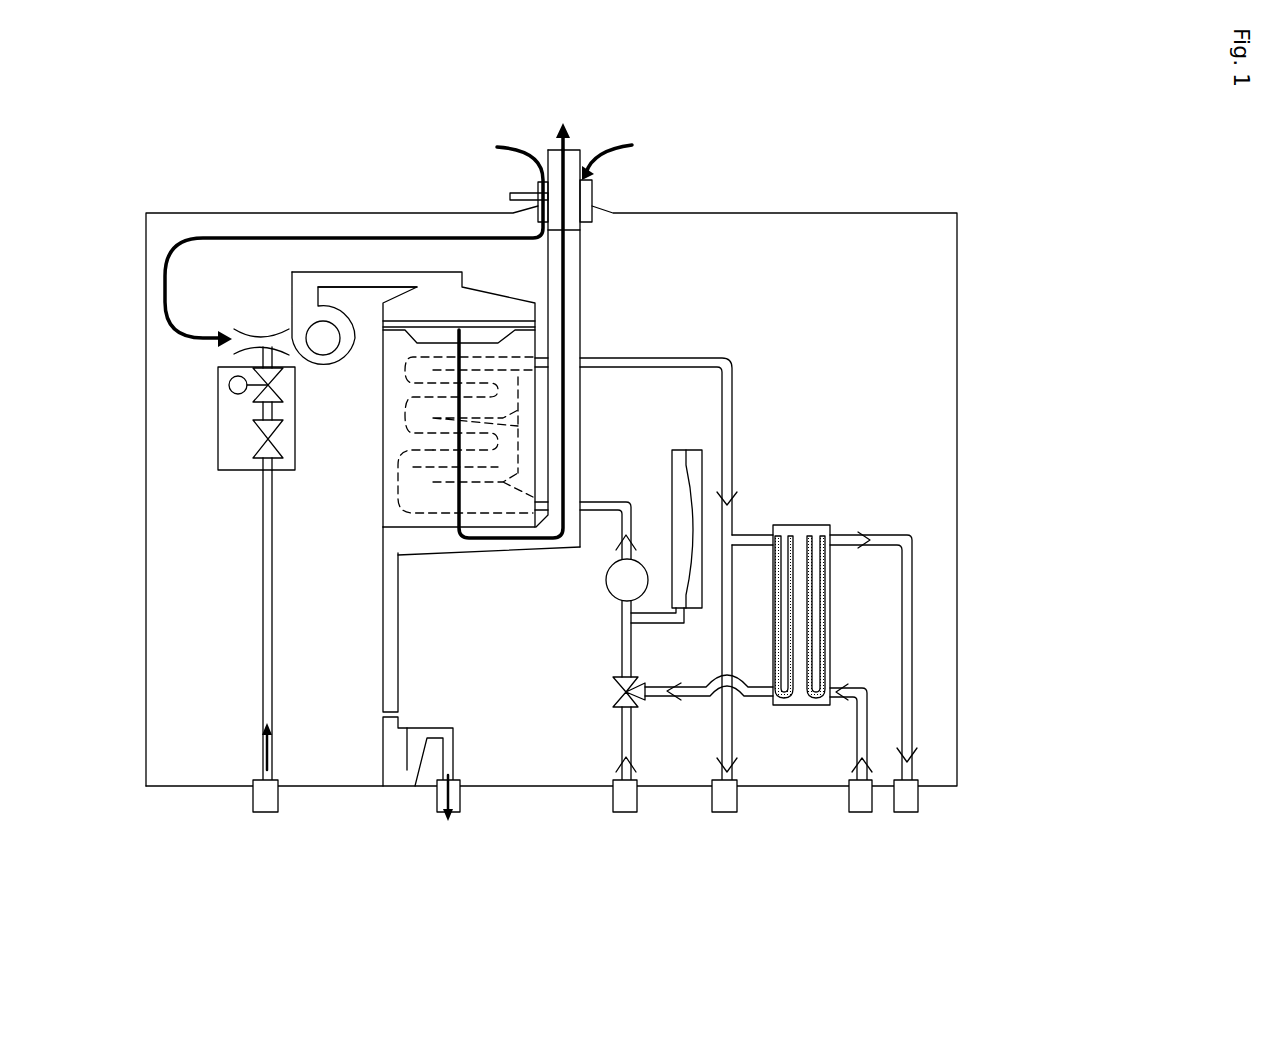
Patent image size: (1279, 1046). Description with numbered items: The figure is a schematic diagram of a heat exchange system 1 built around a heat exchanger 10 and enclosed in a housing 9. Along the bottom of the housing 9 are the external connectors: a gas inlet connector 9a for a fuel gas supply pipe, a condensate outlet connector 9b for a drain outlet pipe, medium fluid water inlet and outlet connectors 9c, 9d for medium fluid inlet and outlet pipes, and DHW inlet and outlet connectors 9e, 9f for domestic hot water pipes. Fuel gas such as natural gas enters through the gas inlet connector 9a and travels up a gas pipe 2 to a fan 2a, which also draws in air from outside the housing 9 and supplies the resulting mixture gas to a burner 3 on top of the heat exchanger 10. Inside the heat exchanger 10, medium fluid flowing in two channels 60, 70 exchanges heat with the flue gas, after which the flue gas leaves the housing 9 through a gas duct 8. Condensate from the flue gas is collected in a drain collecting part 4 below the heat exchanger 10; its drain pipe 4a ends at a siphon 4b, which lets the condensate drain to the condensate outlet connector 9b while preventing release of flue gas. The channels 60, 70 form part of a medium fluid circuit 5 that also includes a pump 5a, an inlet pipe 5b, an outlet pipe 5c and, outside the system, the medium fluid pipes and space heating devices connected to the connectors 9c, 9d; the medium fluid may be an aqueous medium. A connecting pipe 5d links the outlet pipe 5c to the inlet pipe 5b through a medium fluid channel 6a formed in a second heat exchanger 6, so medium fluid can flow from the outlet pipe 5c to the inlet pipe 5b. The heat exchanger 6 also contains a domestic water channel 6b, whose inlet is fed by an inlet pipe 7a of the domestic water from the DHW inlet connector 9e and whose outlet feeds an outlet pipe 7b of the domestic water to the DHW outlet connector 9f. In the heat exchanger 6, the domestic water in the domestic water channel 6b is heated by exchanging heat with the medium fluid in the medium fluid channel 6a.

The heat exchange system 1 is at (1040, 200).
The gas pipe 2 is at (263, 618).
The fan 2a is at (322, 369).
The burner 3 is at (545, 326).
The drain collecting part 4 is at (482, 556).
The drain pipe 4a is at (398, 662).
The siphon 4b is at (383, 751).
The medium fluid circuit 5 is at (757, 378).
The pump 5a is at (606, 588).
The inlet pipe 5b is at (616, 737).
The outlet pipe 5c is at (707, 420).
The connecting pipe 5d is at (758, 528).
The heat exchanger 6 is at (803, 518).
The medium fluid channel 6a is at (779, 706).
The domestic water channel 6b is at (821, 706).
The inlet pipe of the domestic water 7a is at (856, 680).
The outlet pipe of the domestic water 7b is at (885, 530).
The gas duct 8 is at (581, 265).
The housing 9 is at (966, 430).
The gas inlet connector 9a is at (253, 792).
The condensate outlet connector 9b is at (437, 792).
The medium fluid water inlet connector 9c is at (613, 792).
The medium fluid water outlet connector 9d is at (712, 792).
The DHW inlet connector 9e is at (849, 792).
The DHW outlet connector 9f is at (918, 794).
The heat exchanger 10 is at (378, 532).
The channel 60 is at (392, 421).
The channel 70 is at (357, 511).